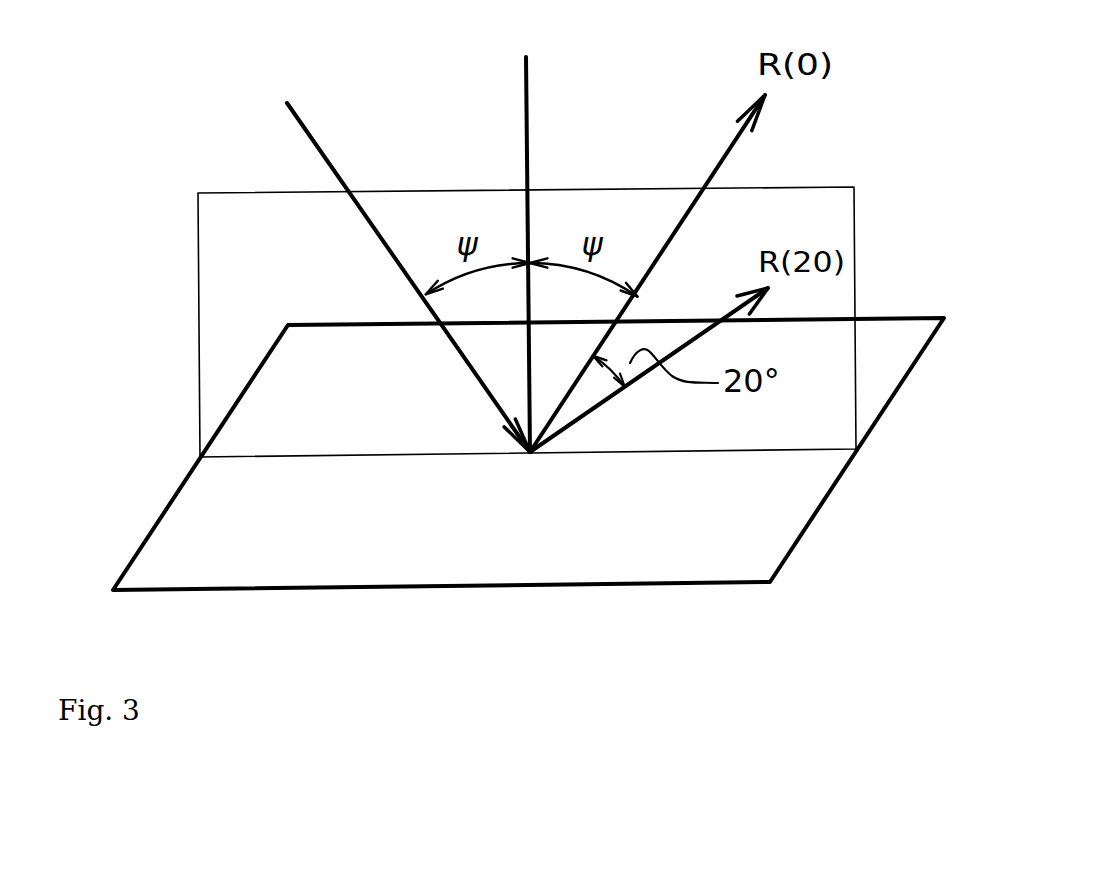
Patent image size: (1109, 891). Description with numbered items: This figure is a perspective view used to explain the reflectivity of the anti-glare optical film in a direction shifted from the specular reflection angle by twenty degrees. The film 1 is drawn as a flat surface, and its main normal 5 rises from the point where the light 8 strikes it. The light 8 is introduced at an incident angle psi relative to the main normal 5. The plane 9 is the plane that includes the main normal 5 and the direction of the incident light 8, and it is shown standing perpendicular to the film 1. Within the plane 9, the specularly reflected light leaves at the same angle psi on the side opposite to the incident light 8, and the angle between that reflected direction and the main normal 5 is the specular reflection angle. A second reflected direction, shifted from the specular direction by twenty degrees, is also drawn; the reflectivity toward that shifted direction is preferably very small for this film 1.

The film 1 is at (755, 522).
The main normal 5 is at (527, 228).
The light 8 is at (390, 264).
The plane 9 is at (243, 305).